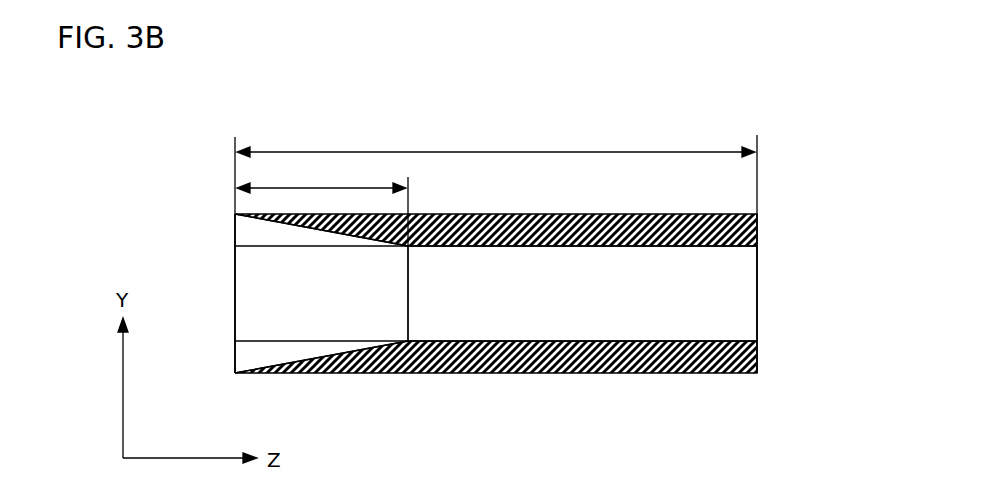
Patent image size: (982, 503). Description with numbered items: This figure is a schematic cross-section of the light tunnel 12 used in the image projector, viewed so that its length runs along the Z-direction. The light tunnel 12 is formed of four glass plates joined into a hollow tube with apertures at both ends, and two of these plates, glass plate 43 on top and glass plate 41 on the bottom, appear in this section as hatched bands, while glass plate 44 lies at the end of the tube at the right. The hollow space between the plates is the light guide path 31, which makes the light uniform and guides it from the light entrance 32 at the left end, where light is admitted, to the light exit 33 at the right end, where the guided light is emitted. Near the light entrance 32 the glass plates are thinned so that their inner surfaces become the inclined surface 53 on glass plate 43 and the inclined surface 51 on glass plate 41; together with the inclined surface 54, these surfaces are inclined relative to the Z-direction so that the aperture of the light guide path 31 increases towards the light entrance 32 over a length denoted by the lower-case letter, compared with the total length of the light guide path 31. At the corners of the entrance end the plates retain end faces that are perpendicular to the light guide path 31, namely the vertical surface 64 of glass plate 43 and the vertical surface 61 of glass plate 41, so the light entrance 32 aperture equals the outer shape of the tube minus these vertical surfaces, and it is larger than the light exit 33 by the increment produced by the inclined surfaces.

The light tunnel 12 is at (516, 80).
The light guide path 31 is at (590, 295).
The light entrance 32 is at (235, 285).
The light exit 33 is at (757, 295).
The glass plate 41 is at (532, 375).
The glass plate 43 is at (528, 212).
The glass plate 44 is at (760, 271).
The inclined surface 51 is at (285, 360).
The inclined surface 53 is at (290, 228).
The inclined surface 54 is at (285, 292).
The vertical surface 61 is at (235, 355).
The vertical surface 64 is at (235, 227).